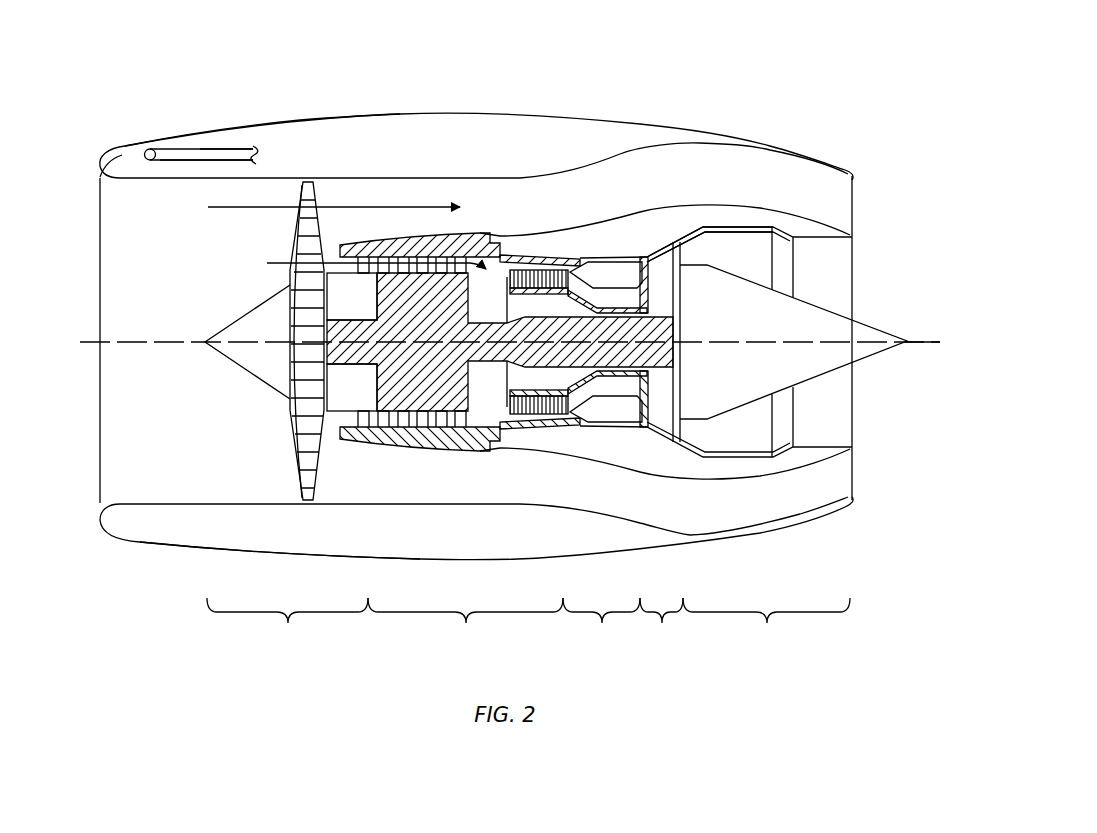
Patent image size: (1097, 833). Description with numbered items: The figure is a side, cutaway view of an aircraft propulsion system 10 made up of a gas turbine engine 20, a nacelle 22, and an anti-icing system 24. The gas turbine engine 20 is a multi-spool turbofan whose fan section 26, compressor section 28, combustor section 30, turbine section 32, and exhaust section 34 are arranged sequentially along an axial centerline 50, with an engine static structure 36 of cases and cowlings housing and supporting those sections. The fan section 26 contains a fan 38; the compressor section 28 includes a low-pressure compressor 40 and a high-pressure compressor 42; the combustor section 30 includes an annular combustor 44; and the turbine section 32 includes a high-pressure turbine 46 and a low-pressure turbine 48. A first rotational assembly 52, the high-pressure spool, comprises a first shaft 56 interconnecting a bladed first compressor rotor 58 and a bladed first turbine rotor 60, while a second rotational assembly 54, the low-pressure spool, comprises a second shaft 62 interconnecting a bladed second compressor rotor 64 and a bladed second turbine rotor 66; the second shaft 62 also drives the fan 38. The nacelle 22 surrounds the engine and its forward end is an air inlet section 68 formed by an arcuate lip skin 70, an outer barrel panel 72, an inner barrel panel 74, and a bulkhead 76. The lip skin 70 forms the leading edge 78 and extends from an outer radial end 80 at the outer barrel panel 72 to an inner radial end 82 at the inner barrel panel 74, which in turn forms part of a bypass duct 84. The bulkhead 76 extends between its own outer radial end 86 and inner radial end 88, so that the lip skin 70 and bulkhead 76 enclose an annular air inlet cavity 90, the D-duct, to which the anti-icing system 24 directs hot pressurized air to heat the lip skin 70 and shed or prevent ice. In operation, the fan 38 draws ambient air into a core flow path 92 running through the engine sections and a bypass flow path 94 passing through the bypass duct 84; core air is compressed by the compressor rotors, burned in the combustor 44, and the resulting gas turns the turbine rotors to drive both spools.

The propulsion system 10 is at (765, 108).
The gas turbine engine 20 is at (775, 196).
The nacelle 22 is at (421, 100).
The anti-icing system 24 is at (218, 140).
The fan section 26 is at (287, 625).
The compressor section 28 is at (465, 625).
The combustor section 30 is at (601, 622).
The turbine section 32 is at (661, 618).
The exhaust section 34 is at (766, 625).
The engine static structure 36 is at (672, 242).
The fan 38 is at (277, 406).
The low-pressure compressor 40 is at (373, 438).
The high-pressure compressor 42 is at (548, 428).
The annular combustor 44 is at (617, 412).
The high-pressure turbine 46 is at (646, 438).
The low-pressure turbine 48 is at (695, 435).
The axial centerline 50 is at (928, 350).
The first rotational assembly 52 is at (598, 290).
The second rotational assembly 54 is at (481, 372).
The first shaft 56 is at (580, 422).
The bladed first compressor rotor 58 is at (512, 400).
The bladed first turbine rotor 60 is at (650, 384).
The second shaft 62 is at (550, 326).
The bladed second compressor rotor 64 is at (428, 375).
The bladed second turbine rotor 66 is at (683, 300).
The air inlet section 68 is at (107, 118).
The lip skin 70 is at (150, 133).
The outer barrel panel 72 is at (298, 118).
The inner barrel panel 74 is at (210, 180).
The bulkhead 76 is at (190, 160).
The leading edge 78 is at (100, 160).
The outer radial end 80 is at (197, 178).
The inner radial end 82 is at (195, 180).
The bypass duct 84 is at (488, 192).
The outer radial end 86 is at (195, 548).
The inner radial end 88 is at (195, 504).
The air inlet cavity 90 is at (120, 158).
The core flow path 92 is at (378, 276).
The bypass flow path 94 is at (430, 205).